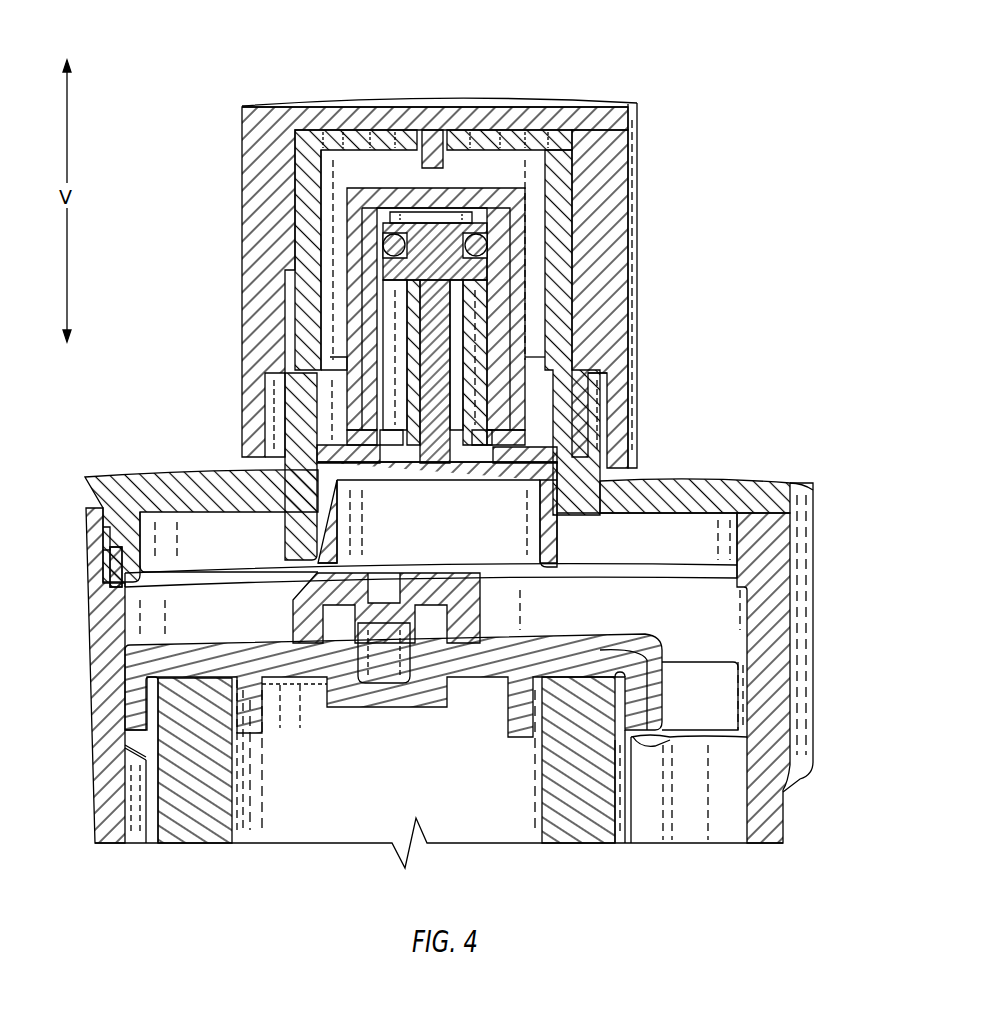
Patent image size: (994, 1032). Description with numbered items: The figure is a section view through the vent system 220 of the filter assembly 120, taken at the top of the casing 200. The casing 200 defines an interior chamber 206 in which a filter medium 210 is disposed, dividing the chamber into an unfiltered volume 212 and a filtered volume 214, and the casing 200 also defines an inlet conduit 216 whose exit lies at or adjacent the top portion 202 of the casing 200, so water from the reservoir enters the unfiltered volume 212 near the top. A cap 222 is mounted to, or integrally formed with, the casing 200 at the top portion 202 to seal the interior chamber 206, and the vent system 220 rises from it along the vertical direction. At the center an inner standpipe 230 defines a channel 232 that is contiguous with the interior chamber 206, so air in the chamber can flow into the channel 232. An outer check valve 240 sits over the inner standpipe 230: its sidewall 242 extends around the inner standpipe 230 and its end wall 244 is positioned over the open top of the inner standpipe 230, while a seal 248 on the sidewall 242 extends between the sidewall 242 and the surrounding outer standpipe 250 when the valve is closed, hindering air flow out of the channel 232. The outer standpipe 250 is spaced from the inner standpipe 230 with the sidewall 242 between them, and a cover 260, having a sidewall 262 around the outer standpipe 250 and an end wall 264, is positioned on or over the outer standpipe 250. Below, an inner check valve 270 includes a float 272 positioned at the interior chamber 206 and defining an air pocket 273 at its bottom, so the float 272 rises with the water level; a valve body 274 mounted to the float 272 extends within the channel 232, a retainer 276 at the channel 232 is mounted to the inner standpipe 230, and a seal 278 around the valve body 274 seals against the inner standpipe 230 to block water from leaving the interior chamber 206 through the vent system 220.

The filter assembly 120 is at (46, 700).
The casing 200 is at (105, 788).
The top portion 202 is at (83, 508).
The interior chamber 206 is at (297, 820).
The filter medium 210 is at (196, 843).
The unfiltered volume 212 is at (144, 843).
The filtered volume 214 is at (490, 820).
The inlet conduit 216 is at (692, 820).
The vent system 220 is at (677, 62).
The cap 222 is at (176, 470).
The inner standpipe 230 is at (383, 255).
The channel 232 is at (393, 297).
The outer check valve 240 is at (345, 190).
The sidewall 242 is at (523, 305).
The end wall 244 is at (460, 192).
The seal 248 is at (300, 362).
The outer standpipe 250 is at (590, 186).
The cover 260 is at (245, 104).
The sidewall 262 is at (634, 258).
The end wall 264 is at (443, 104).
The inner check valve 270 is at (285, 539).
The float 272 is at (548, 548).
The air pocket 273 is at (486, 540).
The valve body 274 is at (468, 285).
The retainer 276 is at (460, 424).
The seal 278 is at (385, 240).